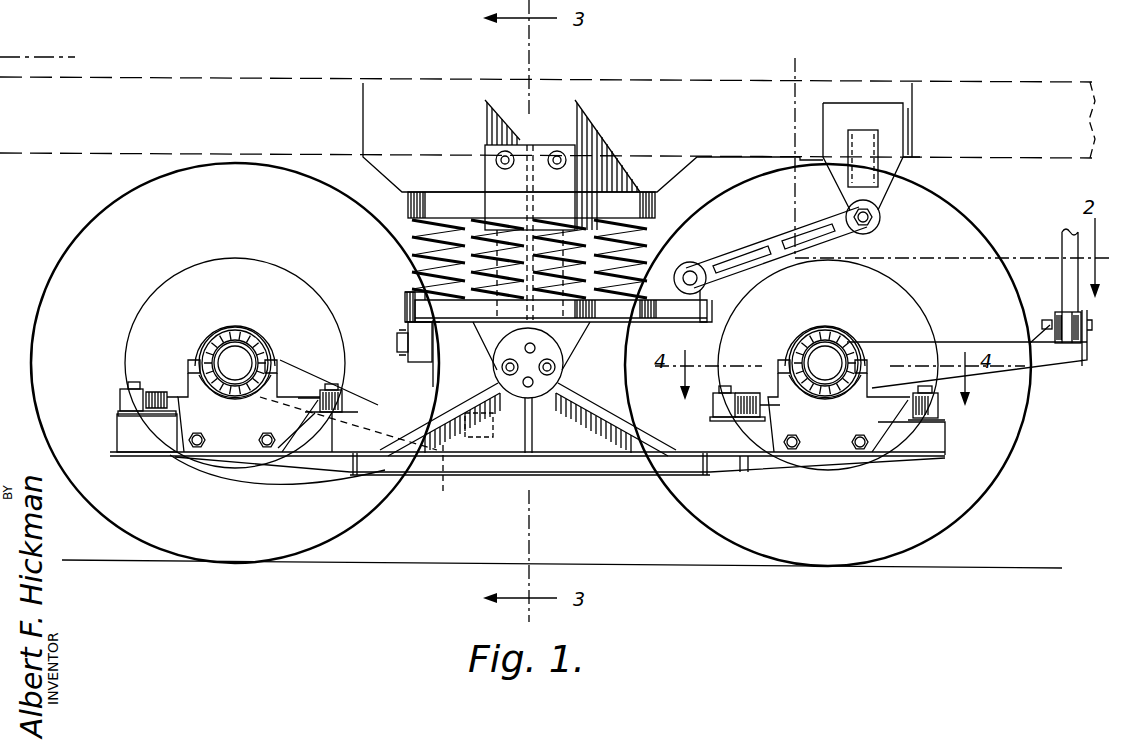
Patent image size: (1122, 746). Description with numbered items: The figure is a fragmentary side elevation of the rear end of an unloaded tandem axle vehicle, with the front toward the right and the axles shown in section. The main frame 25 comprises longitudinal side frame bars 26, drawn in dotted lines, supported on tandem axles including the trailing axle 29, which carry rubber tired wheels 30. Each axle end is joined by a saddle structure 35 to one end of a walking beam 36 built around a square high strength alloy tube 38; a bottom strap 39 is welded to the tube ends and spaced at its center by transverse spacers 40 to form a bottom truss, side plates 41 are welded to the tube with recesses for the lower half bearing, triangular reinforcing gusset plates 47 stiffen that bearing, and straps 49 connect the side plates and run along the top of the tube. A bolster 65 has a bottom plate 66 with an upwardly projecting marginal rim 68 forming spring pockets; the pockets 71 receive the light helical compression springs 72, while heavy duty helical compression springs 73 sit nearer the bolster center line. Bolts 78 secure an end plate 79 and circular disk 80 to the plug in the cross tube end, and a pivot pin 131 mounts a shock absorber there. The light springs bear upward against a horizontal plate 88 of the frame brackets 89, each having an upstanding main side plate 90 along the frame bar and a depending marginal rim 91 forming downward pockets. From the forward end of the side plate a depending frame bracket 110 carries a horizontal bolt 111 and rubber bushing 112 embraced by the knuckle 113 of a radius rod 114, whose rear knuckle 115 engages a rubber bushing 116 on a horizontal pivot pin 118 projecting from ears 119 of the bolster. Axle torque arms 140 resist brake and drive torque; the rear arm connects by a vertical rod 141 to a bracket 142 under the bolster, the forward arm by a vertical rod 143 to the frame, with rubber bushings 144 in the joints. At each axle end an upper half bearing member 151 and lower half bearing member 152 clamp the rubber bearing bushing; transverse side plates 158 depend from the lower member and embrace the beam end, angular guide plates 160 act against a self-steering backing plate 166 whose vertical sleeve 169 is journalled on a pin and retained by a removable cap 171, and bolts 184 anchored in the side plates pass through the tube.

The main frame 25 is at (246, 78).
The longitudinal side frame bar 26 is at (138, 75).
The trailing axle 29 is at (235, 345).
The rubber tired wheel 30 is at (45, 313).
The saddle structure 35 is at (184, 379).
The walking beam 36 is at (116, 433).
The square tube 38 is at (325, 478).
The bottom strap 39 is at (222, 476).
The transverse spacer 40 is at (358, 478).
The plate 41 is at (585, 478).
The triangular reinforcing gusset plate 47 is at (432, 403).
The strap 49 is at (748, 472).
The bolster 65 is at (405, 302).
The bottom plate 66 is at (400, 322).
The marginal rim 68 is at (561, 303).
The spring pocket 71 is at (405, 293).
The light helical compression spring 72 is at (410, 245).
The heavy duty helical compression spring 73 is at (550, 241).
The bolt 78 is at (498, 425).
The end plate 79 is at (577, 330).
The circular disk 80 is at (566, 378).
The horizontal plate 88 is at (462, 193).
The frame bracket 89 is at (487, 120).
The main side plate 90 is at (680, 84).
The depending marginal rim 91 is at (572, 212).
The depending frame bracket 110 is at (905, 171).
The horizontal bolt 111 is at (880, 224).
The rubber bushing 112 is at (876, 232).
The knuckle 113 is at (872, 240).
The radius rod 114 is at (778, 232).
The knuckle 115 is at (752, 250).
The rubber bushing 116 is at (750, 262).
The horizontal pivot pin 118 is at (705, 285).
The horizontal ear 119 is at (712, 315).
The pivot pin 131 is at (556, 366).
The axle torque arm 140 is at (325, 368).
The vertical rod 141 is at (430, 365).
The bracket 142 is at (410, 337).
The vertical rod 143 is at (1063, 275).
The rubber bushing 144 is at (412, 348).
The upper half bearing member 151 is at (213, 340).
The lower half bearing member 152 is at (222, 388).
The transverse side plate 158 is at (178, 458).
The guide plate 160 is at (162, 416).
The self-steering backing plate 166 is at (140, 383).
The vertical sleeve 169 is at (118, 400).
The removable cap 171 is at (122, 390).
The bolt 184 is at (262, 440).